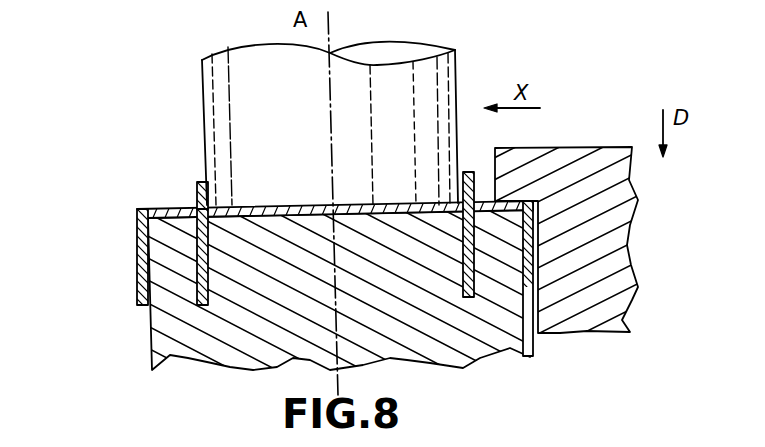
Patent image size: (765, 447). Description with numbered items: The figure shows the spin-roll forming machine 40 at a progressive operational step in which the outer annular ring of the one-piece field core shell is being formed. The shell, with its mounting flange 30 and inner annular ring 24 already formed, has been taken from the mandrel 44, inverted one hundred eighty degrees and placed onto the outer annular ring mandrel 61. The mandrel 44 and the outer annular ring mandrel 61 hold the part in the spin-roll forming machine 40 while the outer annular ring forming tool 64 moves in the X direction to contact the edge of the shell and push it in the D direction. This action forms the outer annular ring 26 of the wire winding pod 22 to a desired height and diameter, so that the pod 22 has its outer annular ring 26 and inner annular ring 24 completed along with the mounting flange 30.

The wire winding pod 22 is at (137, 212).
The inner annular ring 24 is at (208, 306).
The outer annular ring 26 is at (140, 298).
The mounting flange 30 is at (197, 190).
The spin-roll forming machine 40 is at (335, 237).
The mandrel 44 is at (380, 87).
The outer annular ring mandrel 61 is at (147, 335).
The outer annular ring forming tool 64 is at (550, 148).